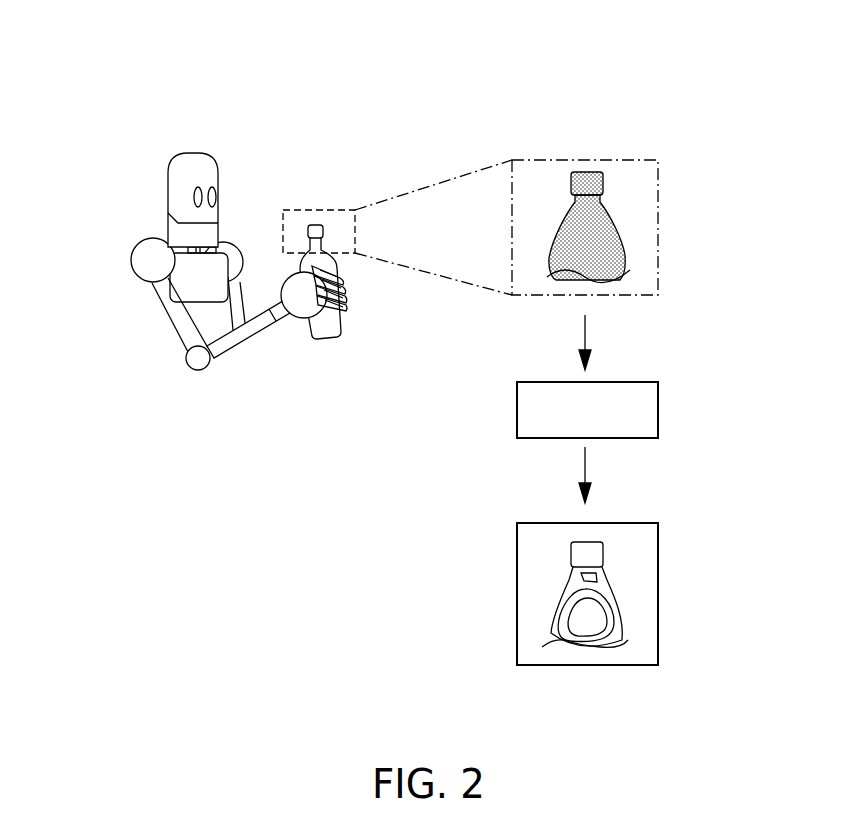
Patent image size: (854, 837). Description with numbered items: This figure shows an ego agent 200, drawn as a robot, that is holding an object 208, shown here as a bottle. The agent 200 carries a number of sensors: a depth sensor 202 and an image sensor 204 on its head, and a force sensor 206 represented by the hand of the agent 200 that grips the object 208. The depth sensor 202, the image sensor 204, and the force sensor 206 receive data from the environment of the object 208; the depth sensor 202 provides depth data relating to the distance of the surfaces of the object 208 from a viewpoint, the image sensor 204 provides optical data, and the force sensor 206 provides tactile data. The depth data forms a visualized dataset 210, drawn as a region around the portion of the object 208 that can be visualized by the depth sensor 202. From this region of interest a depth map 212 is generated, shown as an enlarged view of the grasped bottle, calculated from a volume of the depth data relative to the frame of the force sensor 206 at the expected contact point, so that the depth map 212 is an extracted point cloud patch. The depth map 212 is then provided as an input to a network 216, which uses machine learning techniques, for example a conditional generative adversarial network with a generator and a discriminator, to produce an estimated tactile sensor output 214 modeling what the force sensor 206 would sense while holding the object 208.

The agent 200 is at (117, 46).
The depth sensor 202 is at (198, 187).
The image sensor 204 is at (212, 187).
The force sensor 206 is at (293, 317).
The object 208 is at (347, 322).
The visualized dataset 210 is at (323, 209).
The depth map 212 is at (660, 192).
The estimated tactile sensor output 214 is at (660, 559).
The network 216 is at (660, 408).